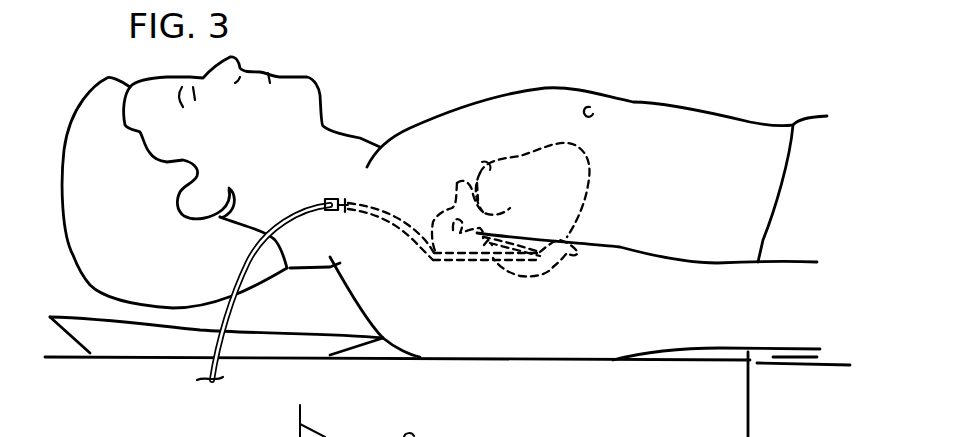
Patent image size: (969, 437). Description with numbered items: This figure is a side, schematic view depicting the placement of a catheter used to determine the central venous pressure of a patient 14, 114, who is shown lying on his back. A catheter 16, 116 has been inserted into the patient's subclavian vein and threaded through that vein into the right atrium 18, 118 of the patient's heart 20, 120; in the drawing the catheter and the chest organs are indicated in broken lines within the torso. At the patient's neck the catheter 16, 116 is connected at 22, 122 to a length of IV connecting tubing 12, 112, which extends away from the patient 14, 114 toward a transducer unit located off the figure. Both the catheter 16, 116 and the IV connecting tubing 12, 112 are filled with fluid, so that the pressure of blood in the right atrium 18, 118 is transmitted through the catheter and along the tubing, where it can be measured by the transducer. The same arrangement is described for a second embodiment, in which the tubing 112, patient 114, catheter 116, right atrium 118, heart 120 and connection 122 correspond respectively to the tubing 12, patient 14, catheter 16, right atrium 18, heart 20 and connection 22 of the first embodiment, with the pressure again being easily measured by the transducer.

The IV connecting tubing 12 is at (277, 297).
The IV connecting tubing 112 is at (240, 315).
The patient 14 is at (444, 196).
The patient 114 is at (532, 102).
The catheter 16 is at (444, 253).
The catheter 116 is at (462, 260).
The right atrium 18 is at (568, 283).
The right atrium 118 is at (553, 268).
The heart 20 is at (598, 148).
The heart 120 is at (598, 150).
The connection 22 is at (399, 138).
The connection 122 is at (337, 198).